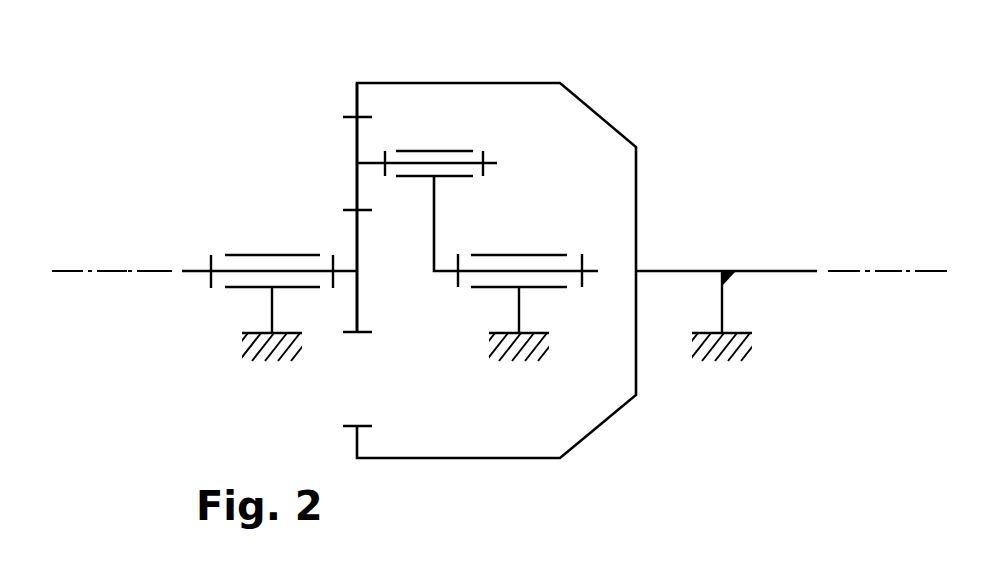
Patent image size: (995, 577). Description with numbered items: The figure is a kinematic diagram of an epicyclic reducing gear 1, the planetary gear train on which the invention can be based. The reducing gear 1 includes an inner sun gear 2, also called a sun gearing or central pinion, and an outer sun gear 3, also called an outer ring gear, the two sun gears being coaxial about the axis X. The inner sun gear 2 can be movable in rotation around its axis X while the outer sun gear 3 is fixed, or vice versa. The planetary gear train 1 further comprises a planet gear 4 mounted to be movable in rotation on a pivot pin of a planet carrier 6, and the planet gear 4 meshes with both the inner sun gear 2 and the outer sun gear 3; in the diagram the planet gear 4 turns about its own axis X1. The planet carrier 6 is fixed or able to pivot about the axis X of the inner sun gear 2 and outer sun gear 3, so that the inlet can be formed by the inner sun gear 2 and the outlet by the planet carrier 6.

The epicyclic reducing gear 1 is at (718, 154).
The inner sun gear 2 is at (357, 301).
The outer sun gear 3 is at (490, 83).
The planet gear 4 is at (355, 137).
The planet carrier 6 is at (434, 202).
The axis X is at (922, 272).
The second axis of rotation X1 is at (493, 161).